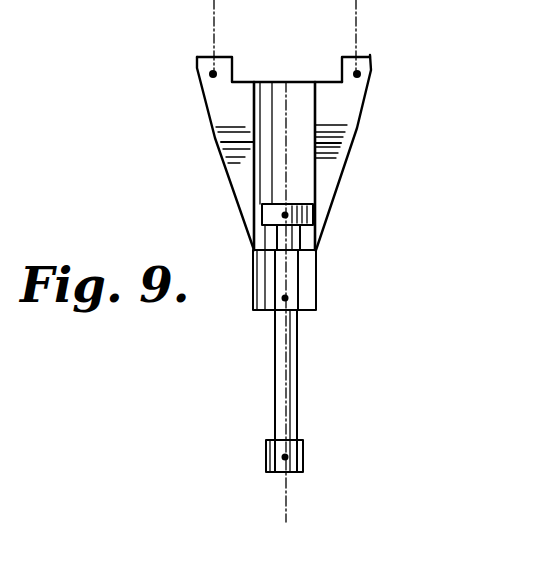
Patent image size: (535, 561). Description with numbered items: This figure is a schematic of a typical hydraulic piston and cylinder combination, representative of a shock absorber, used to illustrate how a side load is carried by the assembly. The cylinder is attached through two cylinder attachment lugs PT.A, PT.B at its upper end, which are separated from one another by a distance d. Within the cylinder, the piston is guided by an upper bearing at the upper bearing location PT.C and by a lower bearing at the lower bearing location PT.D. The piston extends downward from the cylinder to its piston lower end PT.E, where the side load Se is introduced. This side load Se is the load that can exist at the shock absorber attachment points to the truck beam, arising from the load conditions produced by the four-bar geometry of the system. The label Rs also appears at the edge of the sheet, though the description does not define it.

The cylinder attachment lug PT.A is at (213, 74).
The cylinder attachment lug PT.B is at (357, 74).
The upper bearing location PT.C is at (285, 215).
The lower bearing location PT.D is at (285, 298).
The piston lower end PT.E is at (285, 457).
The side load Se is at (258, 456).
The resistance Rs is at (515, 492).
The distance d is at (356, 10).